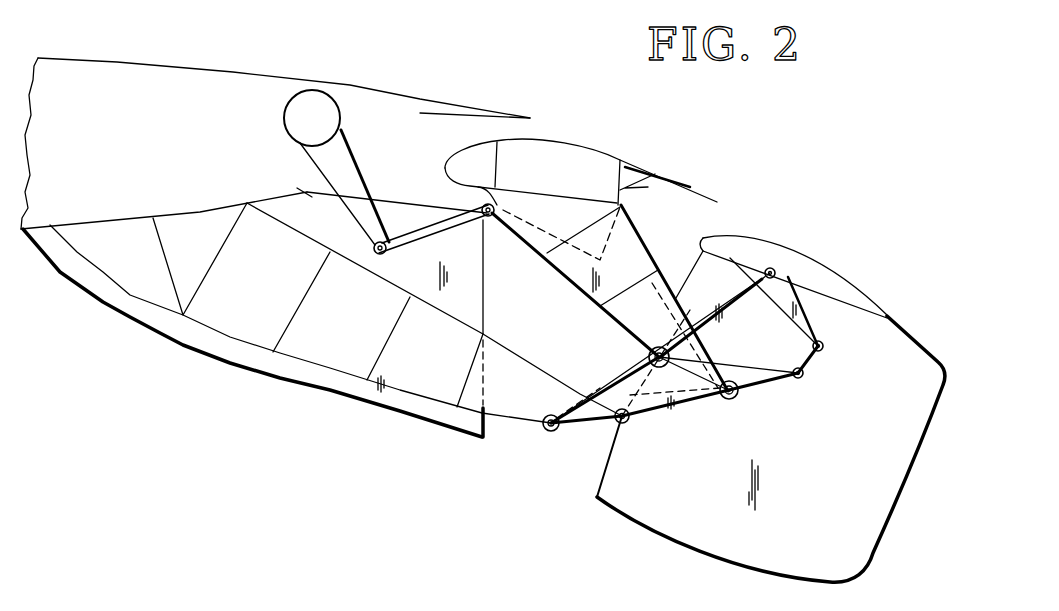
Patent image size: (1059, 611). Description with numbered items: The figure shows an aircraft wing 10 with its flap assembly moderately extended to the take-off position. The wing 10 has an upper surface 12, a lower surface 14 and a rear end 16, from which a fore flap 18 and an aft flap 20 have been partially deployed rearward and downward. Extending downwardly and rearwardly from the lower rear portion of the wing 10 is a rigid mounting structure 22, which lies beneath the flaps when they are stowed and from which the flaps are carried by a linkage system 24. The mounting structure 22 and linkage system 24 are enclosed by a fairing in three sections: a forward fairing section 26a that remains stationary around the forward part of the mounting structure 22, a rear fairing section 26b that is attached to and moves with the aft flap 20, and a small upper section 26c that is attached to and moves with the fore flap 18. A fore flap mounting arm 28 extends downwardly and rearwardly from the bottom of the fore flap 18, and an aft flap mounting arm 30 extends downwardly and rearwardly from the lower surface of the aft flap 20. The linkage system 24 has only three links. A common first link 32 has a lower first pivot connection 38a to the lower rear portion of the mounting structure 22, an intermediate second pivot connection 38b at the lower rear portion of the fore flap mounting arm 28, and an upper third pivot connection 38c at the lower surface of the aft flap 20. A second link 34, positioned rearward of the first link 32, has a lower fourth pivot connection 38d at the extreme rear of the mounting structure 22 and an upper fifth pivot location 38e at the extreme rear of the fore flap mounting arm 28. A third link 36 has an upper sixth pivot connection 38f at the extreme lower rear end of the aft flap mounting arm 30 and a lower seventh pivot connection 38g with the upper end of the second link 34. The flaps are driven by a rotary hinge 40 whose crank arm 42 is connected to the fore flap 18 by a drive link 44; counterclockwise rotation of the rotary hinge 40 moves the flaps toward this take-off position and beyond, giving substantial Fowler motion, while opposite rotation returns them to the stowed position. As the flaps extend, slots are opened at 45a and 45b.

The wing 10 is at (313, 57).
The upper surface 12 is at (134, 163).
The lower surface 14 is at (125, 220).
The rear end 16 is at (395, 98).
The fore flap 18 is at (593, 155).
The aft flap 20 is at (790, 258).
The mounting structure 22 is at (323, 374).
The linkage system 24 is at (778, 397).
The forward fairing section 26a is at (188, 337).
The rear fairing section 26b is at (832, 533).
The upper fairing section 26c is at (635, 232).
The fore flap mounting arm 28 is at (578, 295).
The aft flap mounting arm 30 is at (795, 327).
The first link 32 is at (654, 345).
The second link 34 is at (693, 403).
The third link 36 is at (808, 358).
The first pivot connection 38a is at (547, 433).
The second pivot connection 38b is at (655, 345).
The third pivot connection 38c is at (772, 280).
The fourth pivot connection 38d is at (624, 422).
The fifth pivot location 38e is at (731, 398).
The sixth pivot connection 38f is at (822, 342).
The seventh pivot connection 38g is at (802, 375).
The rotary hinge 40 is at (287, 117).
The crank arm 42 is at (348, 172).
The drive link 44 is at (413, 242).
The slot 45a is at (513, 128).
The slot 45b is at (708, 218).